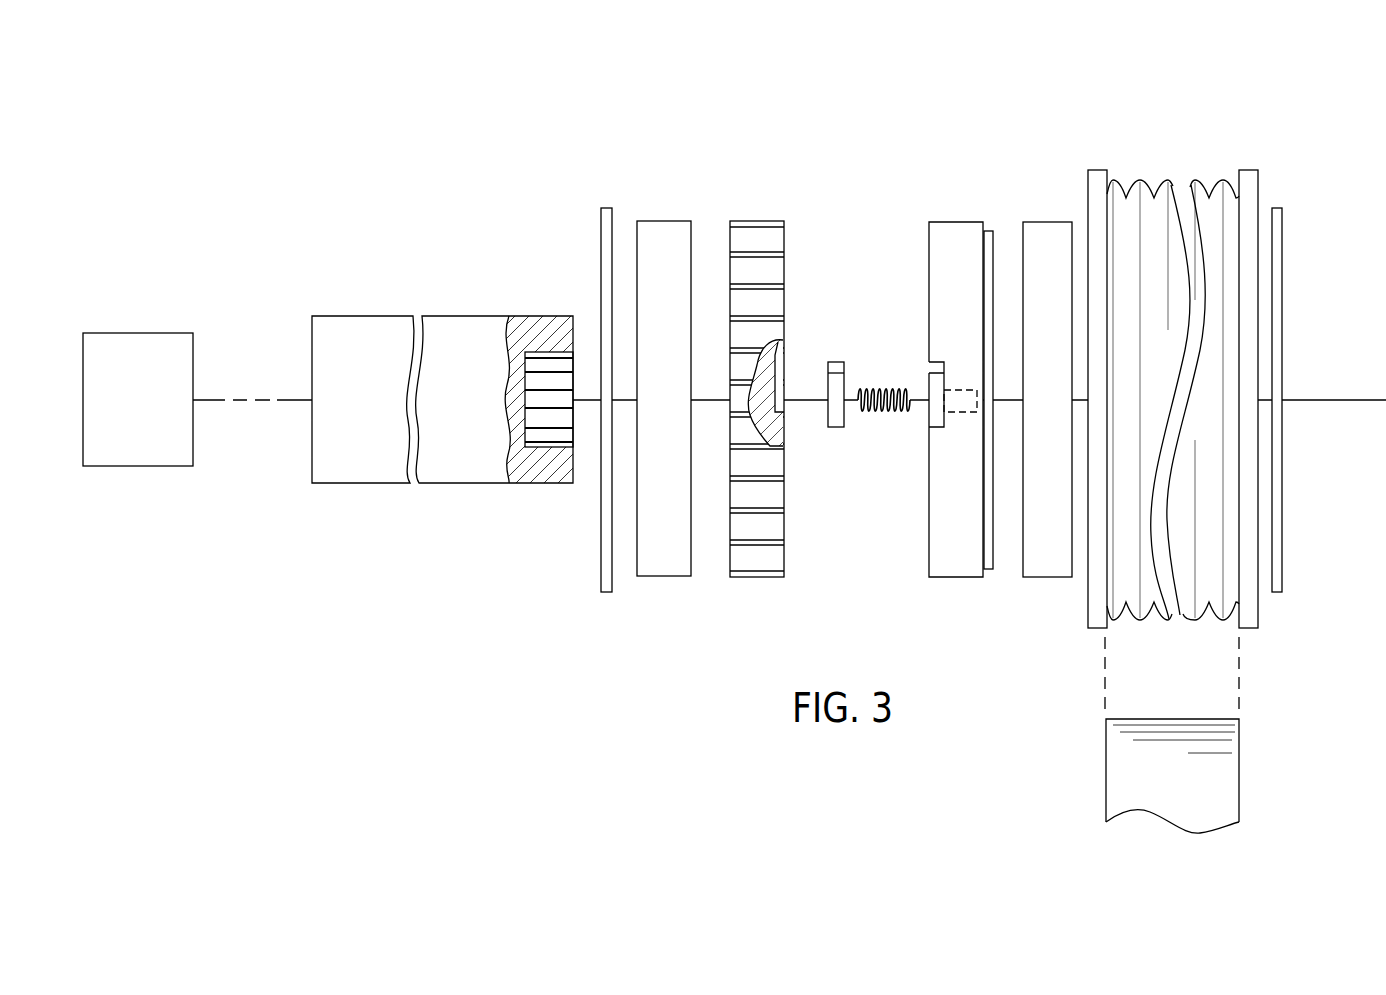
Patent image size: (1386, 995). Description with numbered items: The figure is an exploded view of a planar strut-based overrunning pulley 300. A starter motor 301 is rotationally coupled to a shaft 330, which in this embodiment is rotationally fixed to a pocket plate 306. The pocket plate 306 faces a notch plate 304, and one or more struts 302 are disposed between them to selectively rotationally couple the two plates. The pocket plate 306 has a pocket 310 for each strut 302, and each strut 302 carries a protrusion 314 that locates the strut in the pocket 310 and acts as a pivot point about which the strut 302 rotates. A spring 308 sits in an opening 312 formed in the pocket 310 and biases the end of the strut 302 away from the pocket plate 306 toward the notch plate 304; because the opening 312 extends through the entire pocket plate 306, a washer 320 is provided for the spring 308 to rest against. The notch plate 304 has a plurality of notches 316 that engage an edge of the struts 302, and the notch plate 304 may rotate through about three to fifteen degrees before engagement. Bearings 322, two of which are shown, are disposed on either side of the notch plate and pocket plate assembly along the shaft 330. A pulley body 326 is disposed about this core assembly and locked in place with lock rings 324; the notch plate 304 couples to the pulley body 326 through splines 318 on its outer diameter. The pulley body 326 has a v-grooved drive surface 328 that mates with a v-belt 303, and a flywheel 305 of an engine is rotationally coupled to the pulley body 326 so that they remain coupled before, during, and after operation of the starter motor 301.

The planar strut-based overrunning pulley 300 is at (254, 223).
The starter motor 301 is at (134, 333).
The strut 302 is at (831, 354).
The v-belt 303 is at (1239, 675).
The notch plate 304 is at (780, 354).
The flywheel 305 is at (1239, 770).
The pocket plate 306 is at (956, 363).
The spring 308 is at (883, 412).
The pocket 310 is at (884, 378).
The opening 312 is at (967, 412).
The protrusion 314 is at (845, 363).
The notch 316 is at (795, 413).
The splines 318 is at (742, 221).
The washer 320 is at (990, 231).
The bearing 322 is at (667, 221).
The lock ring 324 is at (601, 208).
The pulley body 326 is at (1172, 351).
The drive surface 328 is at (1182, 160).
The shaft 330 is at (329, 316).